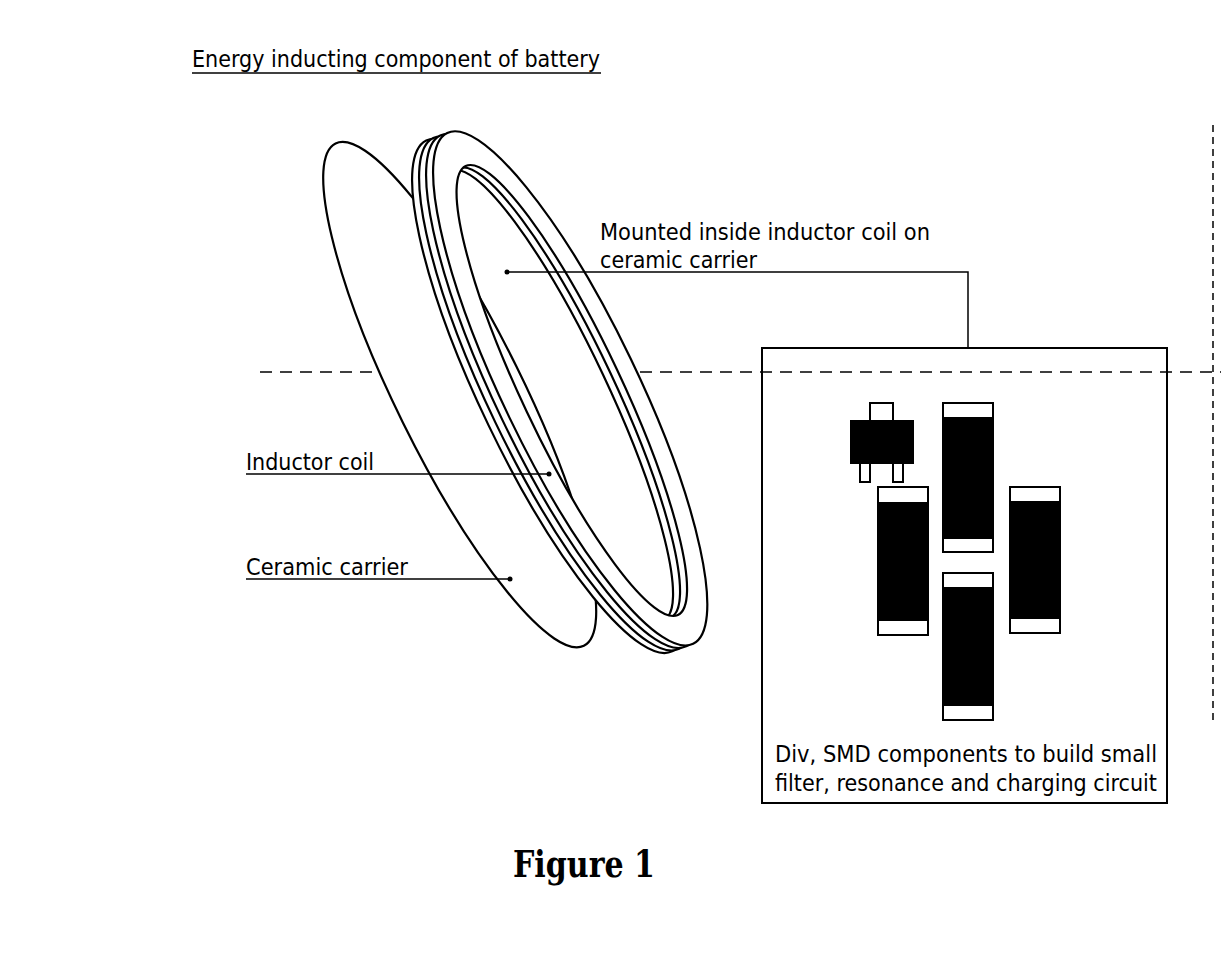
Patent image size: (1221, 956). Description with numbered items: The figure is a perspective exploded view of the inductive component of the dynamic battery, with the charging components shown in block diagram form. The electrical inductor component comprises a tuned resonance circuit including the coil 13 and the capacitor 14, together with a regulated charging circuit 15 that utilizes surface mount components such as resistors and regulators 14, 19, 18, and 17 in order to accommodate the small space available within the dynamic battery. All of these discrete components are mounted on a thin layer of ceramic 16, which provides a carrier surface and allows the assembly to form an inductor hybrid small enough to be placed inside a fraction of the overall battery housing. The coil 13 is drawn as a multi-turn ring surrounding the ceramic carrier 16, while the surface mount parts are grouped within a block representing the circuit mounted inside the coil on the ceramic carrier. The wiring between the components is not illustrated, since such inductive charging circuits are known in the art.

The coil 13 is at (537, 215).
The thin layer of ceramic 16 is at (535, 607).
The regulated charging circuit 15 is at (850, 440).
The surface mount component 19 is at (993, 427).
The capacitor 14 is at (1060, 524).
The surface mount component 18 is at (878, 607).
The surface mount component 17 is at (993, 682).